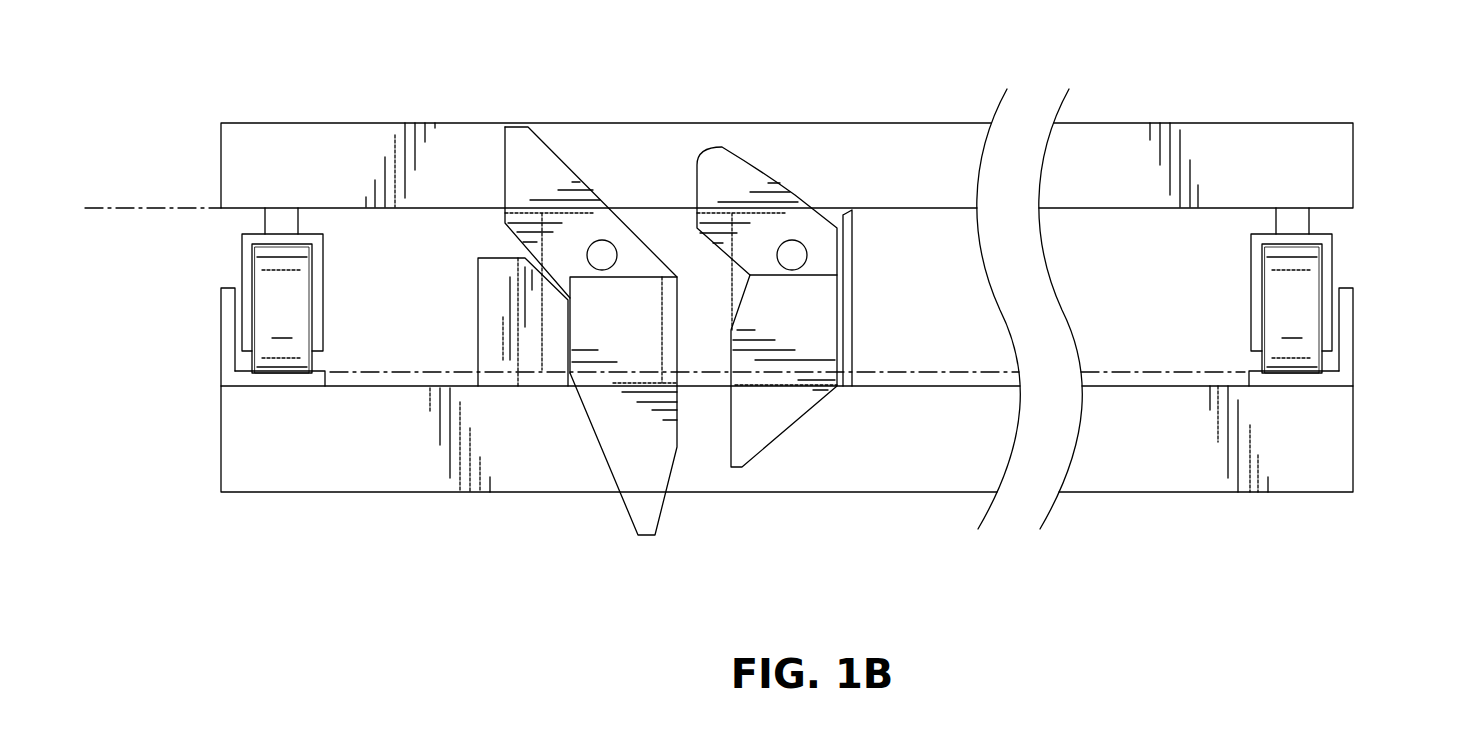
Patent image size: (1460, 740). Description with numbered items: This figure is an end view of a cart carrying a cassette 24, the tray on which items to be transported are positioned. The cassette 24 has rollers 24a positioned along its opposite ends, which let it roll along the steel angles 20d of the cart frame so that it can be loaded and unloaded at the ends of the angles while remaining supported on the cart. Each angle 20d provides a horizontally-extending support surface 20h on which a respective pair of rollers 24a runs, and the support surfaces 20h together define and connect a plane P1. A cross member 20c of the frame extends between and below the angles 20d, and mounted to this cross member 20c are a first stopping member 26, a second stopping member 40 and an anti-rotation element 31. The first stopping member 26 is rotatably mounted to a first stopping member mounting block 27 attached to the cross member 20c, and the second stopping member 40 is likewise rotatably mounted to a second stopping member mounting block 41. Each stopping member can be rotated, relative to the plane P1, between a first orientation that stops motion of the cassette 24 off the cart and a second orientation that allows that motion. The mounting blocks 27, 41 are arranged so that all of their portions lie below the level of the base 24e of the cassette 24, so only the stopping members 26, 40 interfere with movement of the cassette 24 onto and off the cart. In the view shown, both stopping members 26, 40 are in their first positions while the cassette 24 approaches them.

The cassette 24 is at (371, 140).
The base of the cassette 24e is at (414, 208).
The rollers 24a is at (273, 328).
The angles 20d is at (221, 325).
The support surfaces 20h is at (282, 373).
The cross member 20c is at (265, 433).
The plane P1 is at (383, 372).
The anti-rotation element 31 is at (532, 350).
The first stopping member 26 is at (628, 443).
The first stopping member mounting block 27 is at (650, 226).
The second stopping member 40 is at (772, 423).
The second stopping member mounting block 41 is at (841, 224).